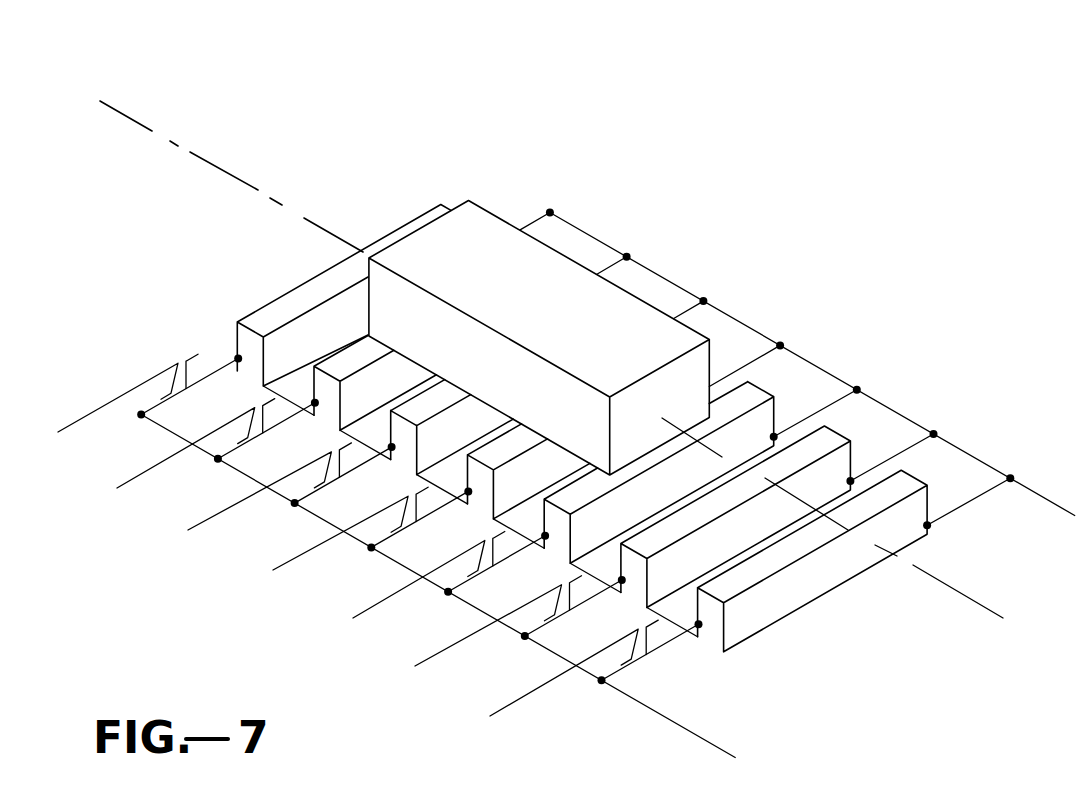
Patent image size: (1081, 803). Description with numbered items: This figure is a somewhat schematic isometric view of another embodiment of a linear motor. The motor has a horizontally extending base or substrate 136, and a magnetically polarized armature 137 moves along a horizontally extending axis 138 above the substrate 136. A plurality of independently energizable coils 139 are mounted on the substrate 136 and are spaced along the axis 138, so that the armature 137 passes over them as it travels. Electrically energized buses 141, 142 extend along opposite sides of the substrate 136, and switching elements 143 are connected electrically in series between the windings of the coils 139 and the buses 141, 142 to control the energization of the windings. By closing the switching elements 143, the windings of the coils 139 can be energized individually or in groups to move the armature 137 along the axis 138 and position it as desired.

The substrate 136 is at (368, 427).
The armature 137 is at (472, 220).
The axis 138 is at (337, 234).
The coils 139 is at (298, 297).
The bus 141 is at (615, 689).
The bus 142 is at (669, 279).
The switching elements 143 is at (184, 364).